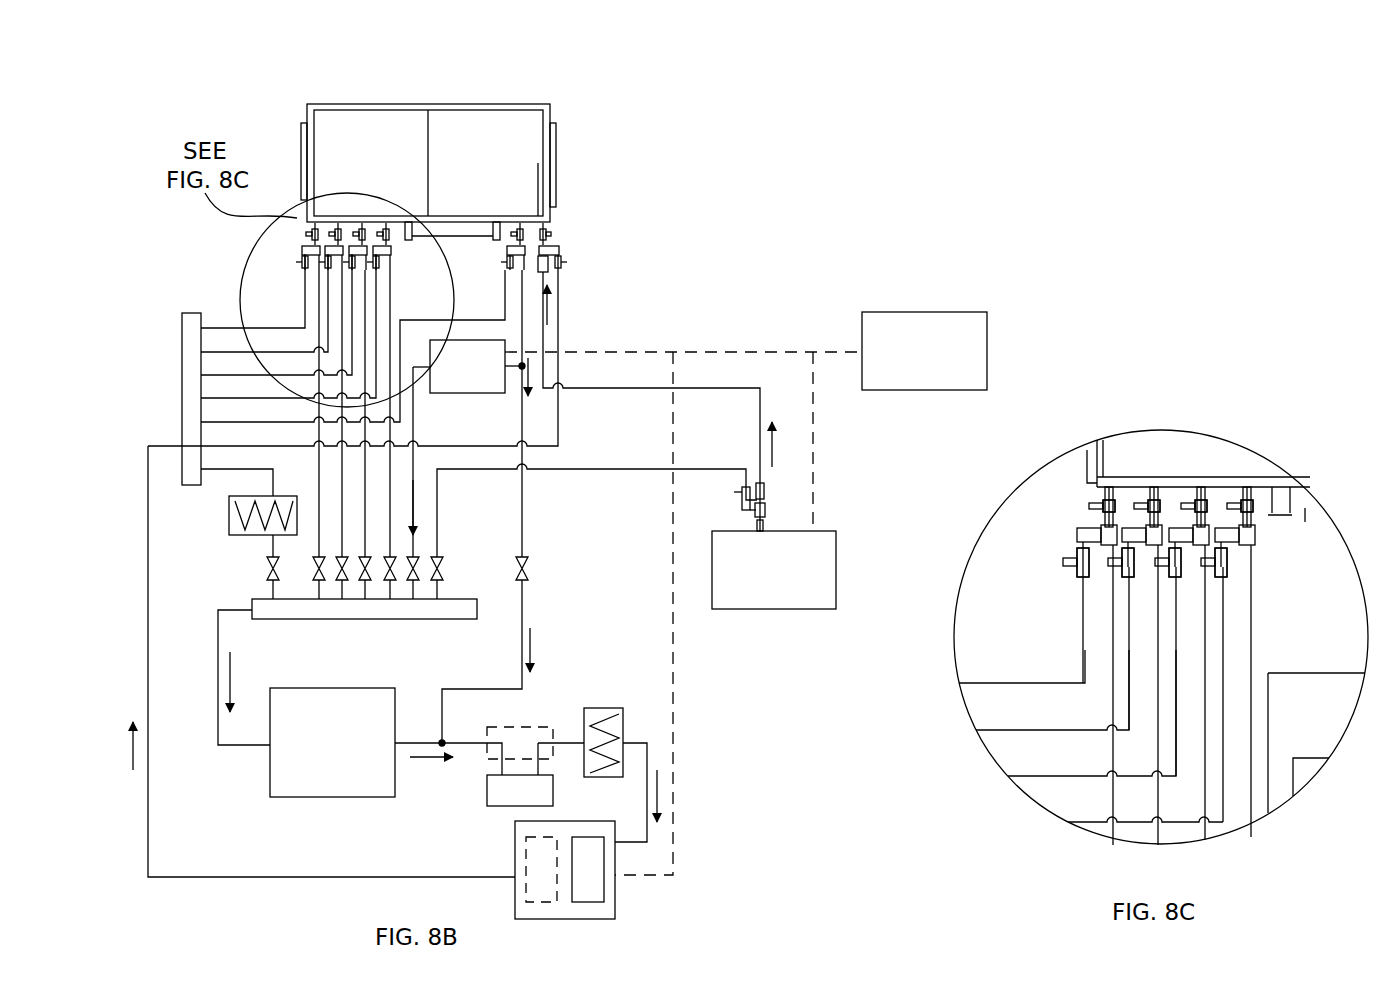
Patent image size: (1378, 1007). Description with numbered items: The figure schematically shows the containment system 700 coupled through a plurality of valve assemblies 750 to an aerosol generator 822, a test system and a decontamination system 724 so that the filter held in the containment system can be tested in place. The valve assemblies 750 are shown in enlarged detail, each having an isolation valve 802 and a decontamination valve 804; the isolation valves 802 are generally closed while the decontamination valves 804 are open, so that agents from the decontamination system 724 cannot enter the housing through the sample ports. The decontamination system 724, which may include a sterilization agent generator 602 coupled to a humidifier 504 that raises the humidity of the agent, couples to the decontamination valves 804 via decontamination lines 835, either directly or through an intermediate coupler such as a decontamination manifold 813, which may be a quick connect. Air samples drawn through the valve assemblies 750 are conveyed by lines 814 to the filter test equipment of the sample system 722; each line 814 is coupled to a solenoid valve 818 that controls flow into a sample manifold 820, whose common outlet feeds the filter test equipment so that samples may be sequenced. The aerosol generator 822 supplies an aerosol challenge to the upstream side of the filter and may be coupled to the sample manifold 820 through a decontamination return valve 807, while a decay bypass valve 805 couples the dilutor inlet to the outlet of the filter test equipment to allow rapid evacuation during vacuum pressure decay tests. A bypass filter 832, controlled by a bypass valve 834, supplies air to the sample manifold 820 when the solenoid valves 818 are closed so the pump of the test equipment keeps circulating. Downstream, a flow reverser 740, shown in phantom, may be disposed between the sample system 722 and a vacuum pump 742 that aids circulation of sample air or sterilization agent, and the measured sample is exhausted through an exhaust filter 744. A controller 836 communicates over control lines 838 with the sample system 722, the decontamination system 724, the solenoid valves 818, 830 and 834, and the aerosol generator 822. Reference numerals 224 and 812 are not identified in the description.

In FIG. 8B, the containment system 700 is at (573, 120).
In FIG. 8B, the valve assembly 750 is at (297, 243).
In FIG. 8C, the valve assembly 750 is at (1074, 526).
In FIG. 8B, the decontamination manifold 813 is at (192, 313).
In FIG. 8B, the decontamination lines 835 is at (213, 440).
In FIG. 8C, the decontamination lines 835 is at (1068, 822).
In FIG. 8B, the lines 814 is at (392, 488).
In FIG. 8C, the lines 814 is at (1153, 640).
In FIG. 8B, the controller 224 is at (445, 393).
In FIG. 8B, the control lines 838 is at (812, 375).
In FIG. 8B, the controller 836 is at (987, 350).
In FIG. 8B, the aerosol generator 822 is at (836, 565).
In FIG. 8B, the bypass filter 832 is at (228, 522).
In FIG. 8B, the bypass valve 834 is at (265, 575).
In FIG. 8B, the sample manifold 820 is at (257, 620).
In FIG. 8B, the solenoid valves 818 is at (319, 580).
In FIG. 8B, the solenoid valve 830 is at (414, 580).
In FIG. 8B, the decontamination return valve 807 is at (442, 572).
In FIG. 8B, the decay bypass valve 805 is at (527, 572).
In FIG. 8B, the reservoir 812 is at (290, 688).
In FIG. 8B, the sample system 722 is at (322, 822).
In FIG. 8B, the flow reverser 740 is at (517, 727).
In FIG. 8B, the vacuum pump 742 is at (553, 787).
In FIG. 8B, the exhaust filter 744 is at (607, 710).
In FIG. 8B, the decontamination system 724 is at (591, 919).
In FIG. 8B, the humidifier 504 is at (526, 840).
In FIG. 8B, the sterilization agent generator 602 is at (604, 887).
In FIG. 8C, the isolation valves 802 is at (1243, 510).
In FIG. 8C, the decontamination valves 804 is at (1078, 572).